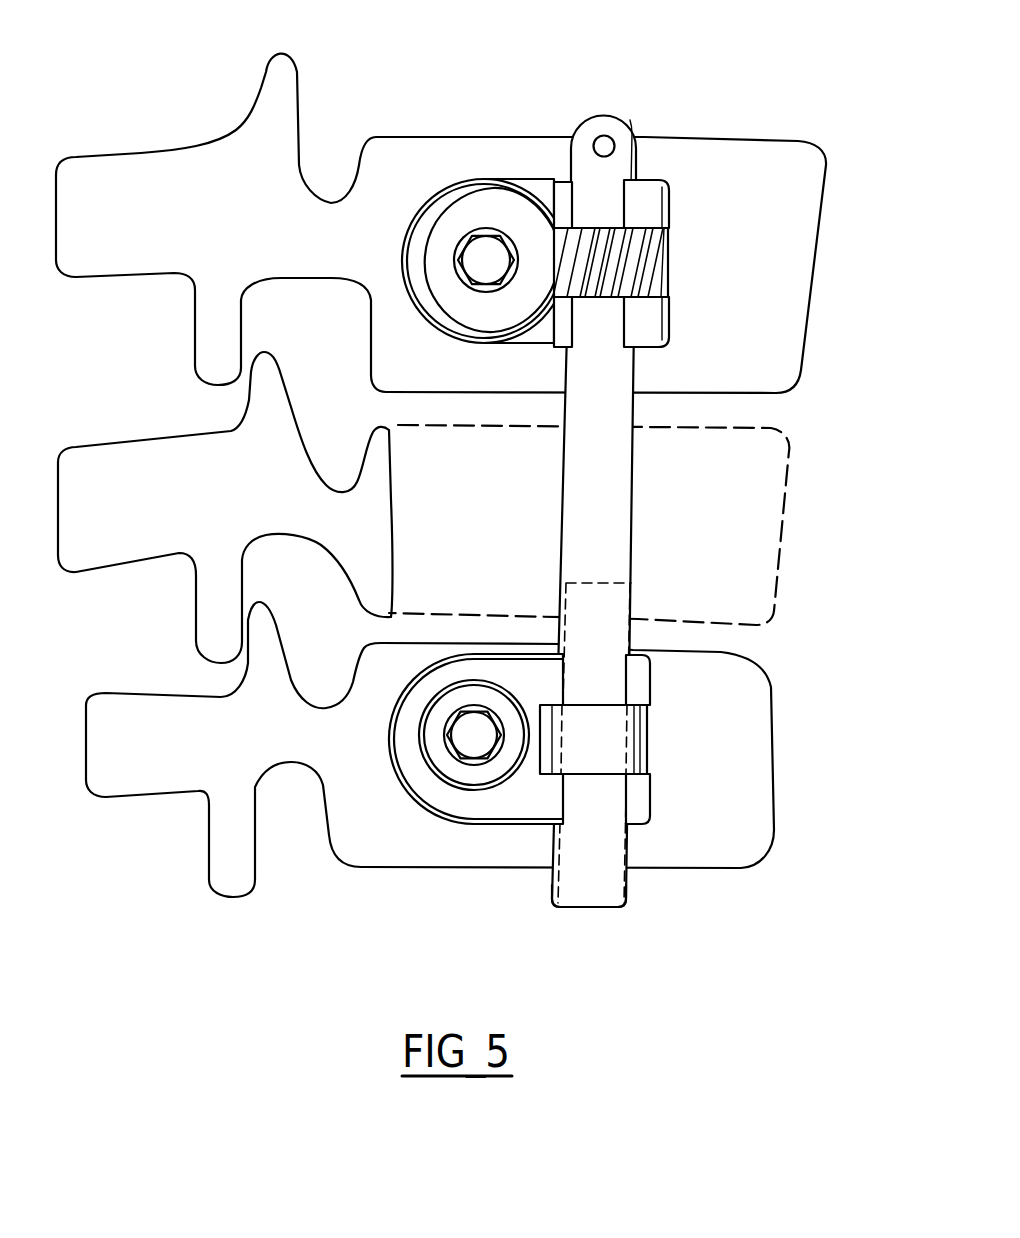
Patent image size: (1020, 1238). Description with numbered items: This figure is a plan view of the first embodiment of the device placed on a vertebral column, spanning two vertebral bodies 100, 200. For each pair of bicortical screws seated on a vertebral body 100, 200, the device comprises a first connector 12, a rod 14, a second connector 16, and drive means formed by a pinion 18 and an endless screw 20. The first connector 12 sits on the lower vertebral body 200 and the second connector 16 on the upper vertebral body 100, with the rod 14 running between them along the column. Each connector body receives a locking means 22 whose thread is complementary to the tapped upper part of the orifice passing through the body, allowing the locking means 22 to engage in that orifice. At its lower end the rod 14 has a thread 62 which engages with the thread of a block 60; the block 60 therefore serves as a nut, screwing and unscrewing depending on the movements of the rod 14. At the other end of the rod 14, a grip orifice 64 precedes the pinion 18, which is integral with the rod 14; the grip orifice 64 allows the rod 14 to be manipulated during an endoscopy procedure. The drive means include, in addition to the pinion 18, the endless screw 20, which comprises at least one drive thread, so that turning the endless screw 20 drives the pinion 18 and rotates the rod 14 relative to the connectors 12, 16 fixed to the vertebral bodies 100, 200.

The first connector 12 is at (356, 738).
The rod 14 is at (607, 513).
The second connector 16 is at (378, 241).
The pinion 18 is at (677, 281).
The endless screw 20 is at (478, 211).
The locking means 22 is at (460, 772).
The block 60 is at (651, 755).
The thread 62 is at (631, 886).
The grip orifice 64 is at (606, 132).
The vertebral body 100 is at (790, 257).
The vertebral body 200 is at (738, 767).